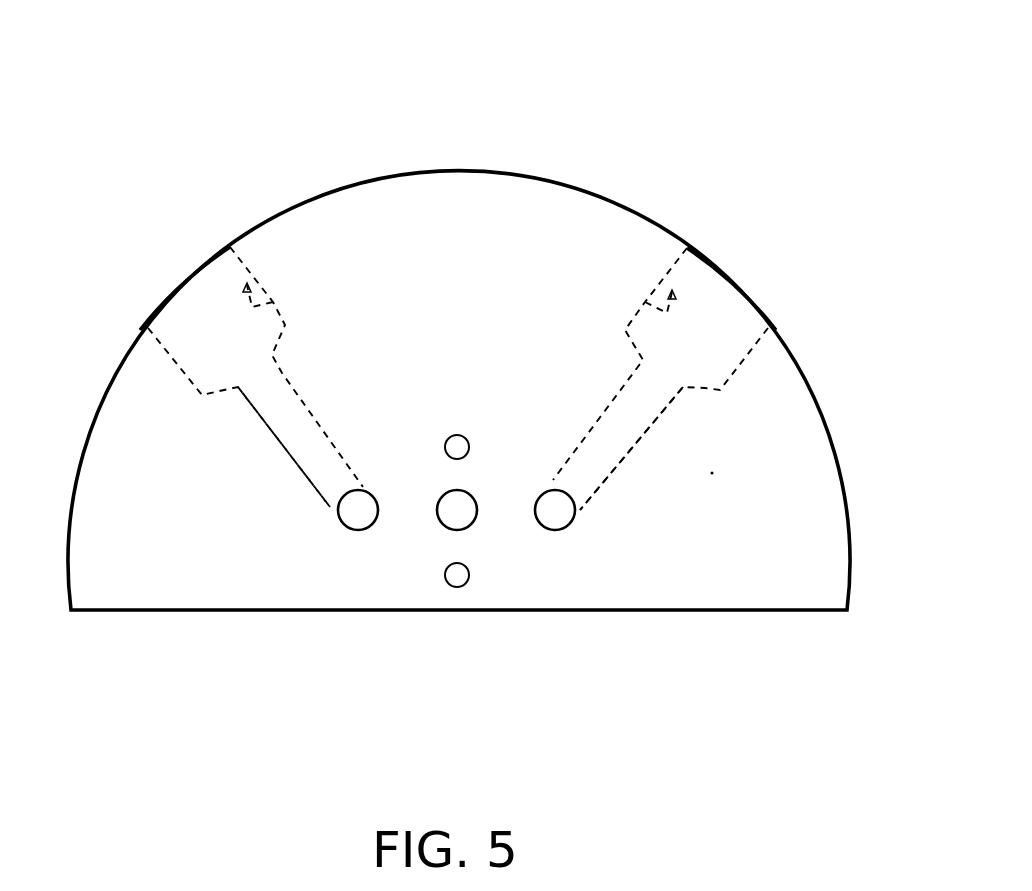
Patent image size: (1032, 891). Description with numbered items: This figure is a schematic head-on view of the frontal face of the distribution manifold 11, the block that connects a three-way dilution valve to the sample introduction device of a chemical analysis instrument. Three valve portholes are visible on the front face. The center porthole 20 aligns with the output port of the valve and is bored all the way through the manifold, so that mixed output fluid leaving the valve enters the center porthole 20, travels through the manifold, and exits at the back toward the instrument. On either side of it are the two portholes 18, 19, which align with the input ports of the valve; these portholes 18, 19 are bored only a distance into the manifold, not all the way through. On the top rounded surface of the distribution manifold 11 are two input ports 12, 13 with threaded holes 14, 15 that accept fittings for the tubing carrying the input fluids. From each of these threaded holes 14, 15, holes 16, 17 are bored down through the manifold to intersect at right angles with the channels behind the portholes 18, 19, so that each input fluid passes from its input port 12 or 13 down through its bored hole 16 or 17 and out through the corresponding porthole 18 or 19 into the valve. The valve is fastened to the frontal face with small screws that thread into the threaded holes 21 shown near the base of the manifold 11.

The distribution manifold 11 is at (472, 152).
The input port 12 is at (183, 277).
The input port 13 is at (741, 280).
The threaded hole 14 is at (273, 302).
The threaded hole 15 is at (645, 302).
The bored hole 16 is at (310, 442).
The bored hole 17 is at (615, 433).
The porthole 18 is at (358, 515).
The porthole 19 is at (553, 515).
The center porthole 20 is at (457, 515).
The threaded holes 21 is at (463, 448).